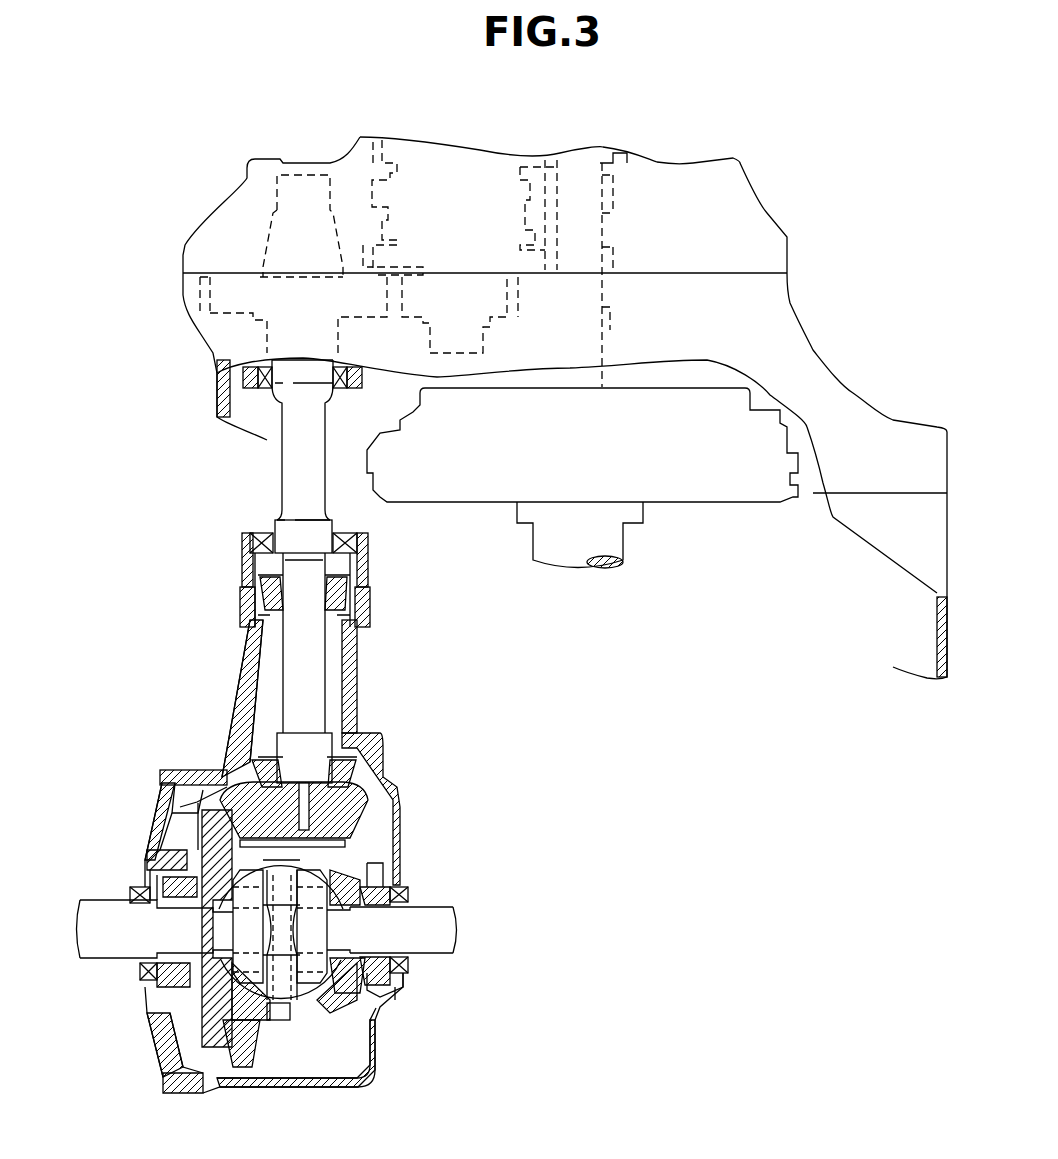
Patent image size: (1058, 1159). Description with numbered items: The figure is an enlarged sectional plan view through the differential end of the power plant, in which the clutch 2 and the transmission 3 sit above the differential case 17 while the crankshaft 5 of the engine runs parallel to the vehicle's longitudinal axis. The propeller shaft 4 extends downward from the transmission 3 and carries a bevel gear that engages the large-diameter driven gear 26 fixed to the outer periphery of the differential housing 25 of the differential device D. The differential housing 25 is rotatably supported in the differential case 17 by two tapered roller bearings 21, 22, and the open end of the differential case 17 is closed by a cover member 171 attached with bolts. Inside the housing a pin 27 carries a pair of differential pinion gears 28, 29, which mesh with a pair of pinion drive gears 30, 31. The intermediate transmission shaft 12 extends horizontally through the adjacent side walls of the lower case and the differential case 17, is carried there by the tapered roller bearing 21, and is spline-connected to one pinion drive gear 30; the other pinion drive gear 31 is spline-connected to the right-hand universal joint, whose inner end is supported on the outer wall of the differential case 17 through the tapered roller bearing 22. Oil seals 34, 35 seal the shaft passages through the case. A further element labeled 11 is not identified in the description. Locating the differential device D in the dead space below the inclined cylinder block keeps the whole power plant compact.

The clutch 2 is at (703, 500).
The transmission 3 is at (642, 170).
The propeller shaft 4 is at (310, 667).
The crankshaft 5 is at (553, 560).
The left axle shaft 11 is at (98, 953).
The intermediate transmission shaft 12 is at (427, 908).
The differential case 17 is at (327, 1087).
The cover member 171 is at (175, 1048).
The tapered roller bearing 21 is at (382, 997).
The tapered roller bearing 22 is at (160, 853).
The differential housing 25 is at (297, 1007).
The driven gear 26 is at (247, 1050).
The pin 27 is at (278, 1010).
The differential pinion gear 28 is at (317, 870).
The differential pinion gear 29 is at (310, 990).
The pinion drive gear 30 is at (324, 937).
The pinion drive gear 31 is at (258, 937).
The oil seal 34 is at (407, 965).
The oil seal 35 is at (138, 892).
The differential device D is at (252, 1080).